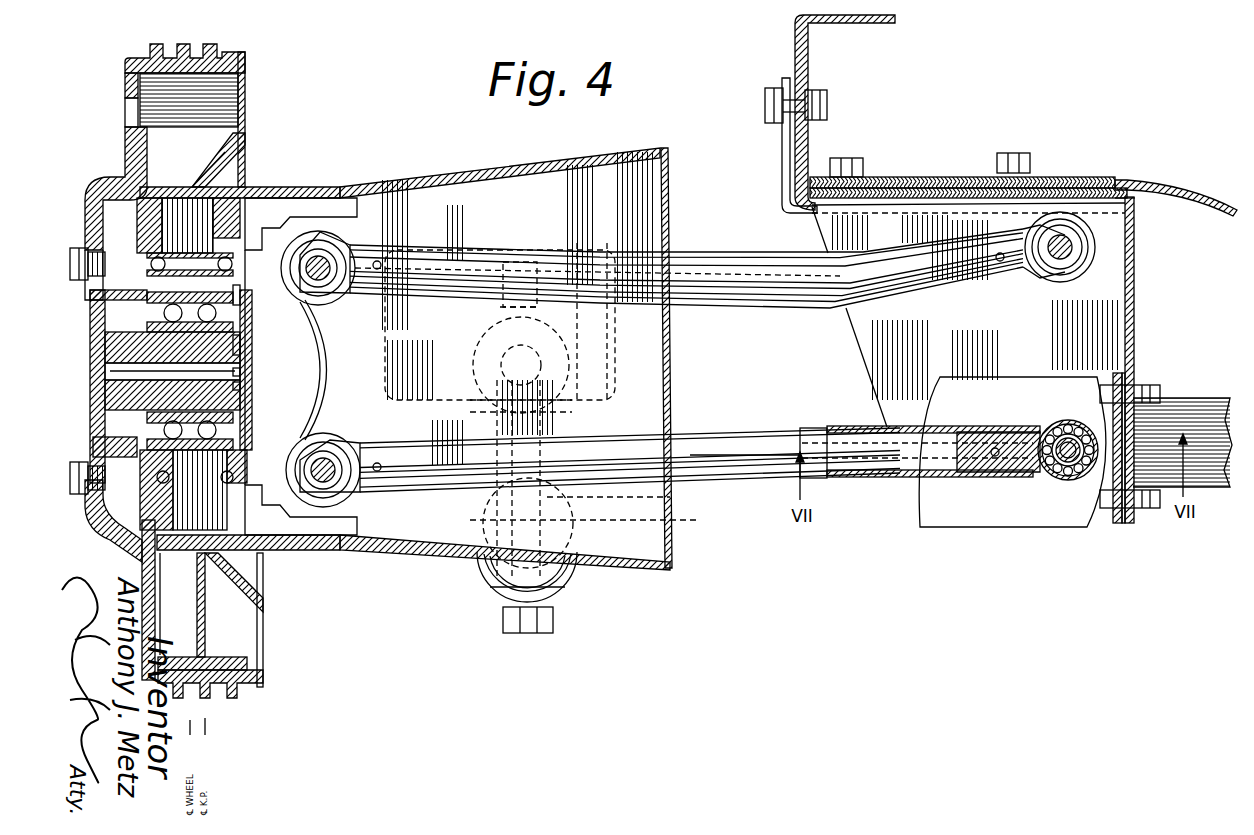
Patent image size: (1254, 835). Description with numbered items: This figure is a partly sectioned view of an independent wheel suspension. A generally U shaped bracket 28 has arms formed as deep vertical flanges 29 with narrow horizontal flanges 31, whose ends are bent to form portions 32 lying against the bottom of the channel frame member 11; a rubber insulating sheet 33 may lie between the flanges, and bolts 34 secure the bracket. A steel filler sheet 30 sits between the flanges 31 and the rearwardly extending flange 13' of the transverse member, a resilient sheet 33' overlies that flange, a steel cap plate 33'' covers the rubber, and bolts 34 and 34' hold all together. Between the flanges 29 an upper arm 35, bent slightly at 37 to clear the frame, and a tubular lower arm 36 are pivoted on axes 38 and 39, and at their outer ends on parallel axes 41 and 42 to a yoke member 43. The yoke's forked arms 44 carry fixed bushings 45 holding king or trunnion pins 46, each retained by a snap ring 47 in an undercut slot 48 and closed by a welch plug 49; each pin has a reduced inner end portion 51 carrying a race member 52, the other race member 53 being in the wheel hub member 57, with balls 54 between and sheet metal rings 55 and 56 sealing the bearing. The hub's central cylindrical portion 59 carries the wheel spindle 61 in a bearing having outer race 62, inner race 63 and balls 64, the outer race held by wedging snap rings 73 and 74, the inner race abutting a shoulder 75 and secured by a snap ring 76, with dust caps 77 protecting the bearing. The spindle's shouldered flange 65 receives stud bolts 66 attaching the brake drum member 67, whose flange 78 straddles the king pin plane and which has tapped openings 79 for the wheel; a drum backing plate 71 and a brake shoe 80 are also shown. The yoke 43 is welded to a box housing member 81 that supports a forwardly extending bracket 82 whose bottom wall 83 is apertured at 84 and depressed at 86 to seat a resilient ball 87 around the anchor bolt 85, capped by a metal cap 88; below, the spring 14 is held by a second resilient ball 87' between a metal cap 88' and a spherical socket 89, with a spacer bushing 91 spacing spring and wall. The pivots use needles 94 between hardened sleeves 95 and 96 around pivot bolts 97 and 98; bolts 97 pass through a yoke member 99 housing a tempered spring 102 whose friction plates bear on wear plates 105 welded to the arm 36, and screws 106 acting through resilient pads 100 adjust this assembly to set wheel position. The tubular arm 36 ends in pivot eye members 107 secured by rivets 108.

The channel frame member 11 is at (810, 52).
The rearwardly extending flange 13' is at (1176, 181).
The spring 14 is at (1190, 408).
The U shaped bracket 28 is at (1137, 265).
The vertically extending flanges 29 is at (872, 373).
The steel filler sheet 30 is at (1135, 200).
The horizontal flanges 31 is at (905, 222).
The portions 32 is at (782, 143).
The sheet of rubber or other insulating material 33 is at (778, 92).
The sheet of rubber or other resilient material 33' is at (968, 170).
The steel cap plate 33'' is at (962, 165).
The bolts 34 is at (847, 143).
The bolts 34' is at (1015, 144).
The upper arm 35 is at (912, 292).
The lower arm 36 is at (742, 432).
The bend 37 is at (825, 309).
The pivot axis 38 is at (1070, 258).
The pivot axis 39 is at (1068, 442).
The pivot axis 41 is at (335, 255).
The pivot axis 42 is at (323, 510).
The yoke member 43 is at (318, 364).
The forked arms 44 is at (258, 200).
The fixed bushing 45 is at (256, 189).
The king or trunnion pin 46 is at (175, 210).
The snap ring 47 is at (112, 186).
The undercut slot 48 is at (238, 165).
The welch plug 49 is at (196, 186).
The reduced inner end portion 51 is at (187, 260).
The race member 52 is at (247, 232).
The race member 53 is at (262, 240).
The balls 54 is at (150, 258).
The sheet metal ring 55 is at (150, 485).
The sheet metal ring 56 is at (262, 448).
The wheel hub member 57 is at (250, 296).
The central cylindrical portion 59 is at (160, 430).
The wheel spindle 61 is at (112, 352).
The outer race 62 is at (163, 308).
The inner race 63 is at (92, 335).
The balls 64 is at (172, 347).
The shouldered flange 65 is at (100, 522).
The stud bolts 66 is at (76, 250).
The brake drum member 67 is at (122, 168).
The drum backing plate 71 is at (246, 90).
The wedging snap ring 73 is at (252, 322).
The wedging snap ring 74 is at (150, 292).
The circumferential shoulder 75 is at (158, 418).
The wedging snap ring 76 is at (252, 340).
The dust caps 77 is at (250, 380).
The flange of the brake drum 78 is at (178, 60).
The tapped openings 79 is at (124, 108).
The brake shoe 80 is at (205, 626).
The box skirt or housing member 81 is at (512, 172).
The forwardly extending bracket 82 is at (612, 343).
The bottom wall 83 is at (445, 405).
The aperture 84 is at (560, 400).
The anchor bolt 85 is at (478, 576).
The depressed portions 86 is at (490, 400).
The resilient ball 87 is at (557, 365).
The resilient ball 87' is at (557, 593).
The metal cap 88 is at (555, 311).
The metal cap 88' is at (504, 620).
The spherical socket 89 is at (575, 515).
The spacer bushing 91 is at (580, 414).
The needles 94 is at (1064, 478).
The bearing sleeve 95 is at (1056, 470).
The bearing sleeve 96 is at (1045, 462).
The pivot bolt 97 is at (1060, 440).
The pivot bolt 98 is at (322, 275).
The yoke member 99 is at (1118, 376).
The resilient pads 100 is at (1137, 386).
The spring 102 is at (1122, 524).
The wear plates 105 is at (957, 392).
The bolts or screws 106 is at (1140, 508).
The pivot eye members 107 is at (360, 290).
The rivets 108 is at (380, 262).